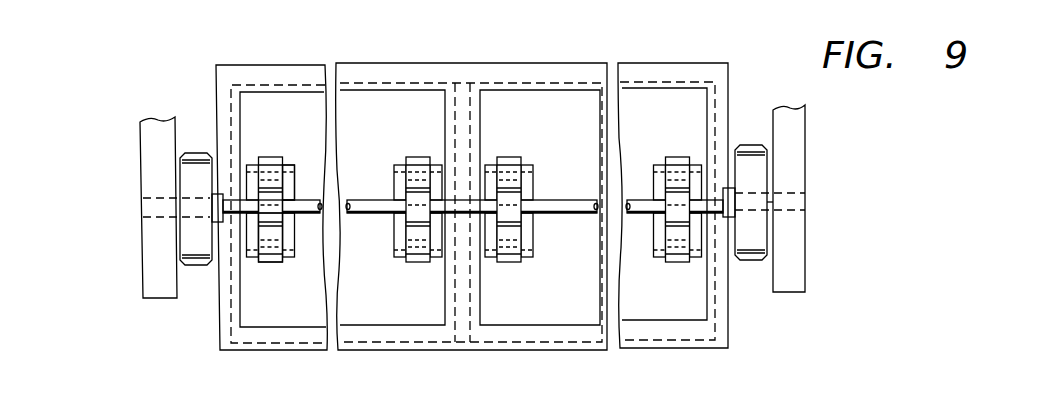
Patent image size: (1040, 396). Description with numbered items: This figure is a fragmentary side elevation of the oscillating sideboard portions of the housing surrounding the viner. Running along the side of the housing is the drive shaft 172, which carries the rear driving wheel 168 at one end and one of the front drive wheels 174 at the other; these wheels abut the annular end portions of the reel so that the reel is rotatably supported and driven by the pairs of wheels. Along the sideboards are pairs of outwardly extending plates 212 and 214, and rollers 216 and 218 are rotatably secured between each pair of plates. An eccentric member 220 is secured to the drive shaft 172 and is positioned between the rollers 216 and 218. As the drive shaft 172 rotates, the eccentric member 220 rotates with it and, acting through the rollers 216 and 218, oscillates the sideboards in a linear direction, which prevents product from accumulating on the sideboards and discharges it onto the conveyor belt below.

The driving wheel 168 is at (190, 173).
The shaft 172 is at (558, 197).
The front drive wheel 174 is at (758, 167).
The outwardly extending plate 212 is at (293, 183).
The outwardly extending plate 214 is at (259, 160).
The roller 216 is at (273, 160).
The roller 218 is at (271, 265).
The eccentric member 220 is at (278, 224).